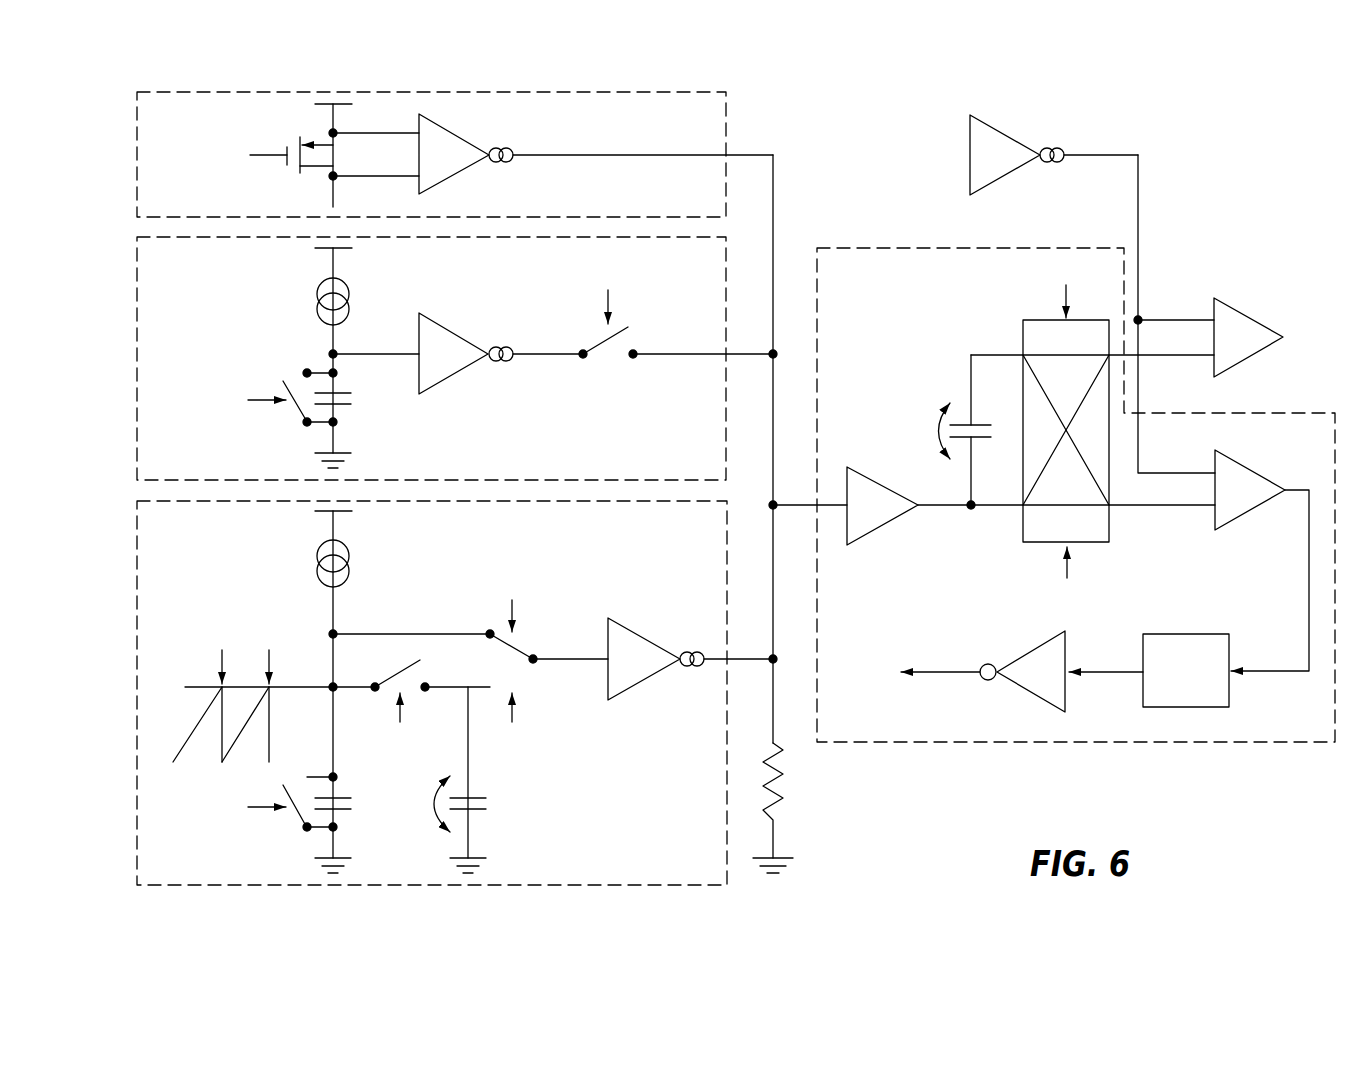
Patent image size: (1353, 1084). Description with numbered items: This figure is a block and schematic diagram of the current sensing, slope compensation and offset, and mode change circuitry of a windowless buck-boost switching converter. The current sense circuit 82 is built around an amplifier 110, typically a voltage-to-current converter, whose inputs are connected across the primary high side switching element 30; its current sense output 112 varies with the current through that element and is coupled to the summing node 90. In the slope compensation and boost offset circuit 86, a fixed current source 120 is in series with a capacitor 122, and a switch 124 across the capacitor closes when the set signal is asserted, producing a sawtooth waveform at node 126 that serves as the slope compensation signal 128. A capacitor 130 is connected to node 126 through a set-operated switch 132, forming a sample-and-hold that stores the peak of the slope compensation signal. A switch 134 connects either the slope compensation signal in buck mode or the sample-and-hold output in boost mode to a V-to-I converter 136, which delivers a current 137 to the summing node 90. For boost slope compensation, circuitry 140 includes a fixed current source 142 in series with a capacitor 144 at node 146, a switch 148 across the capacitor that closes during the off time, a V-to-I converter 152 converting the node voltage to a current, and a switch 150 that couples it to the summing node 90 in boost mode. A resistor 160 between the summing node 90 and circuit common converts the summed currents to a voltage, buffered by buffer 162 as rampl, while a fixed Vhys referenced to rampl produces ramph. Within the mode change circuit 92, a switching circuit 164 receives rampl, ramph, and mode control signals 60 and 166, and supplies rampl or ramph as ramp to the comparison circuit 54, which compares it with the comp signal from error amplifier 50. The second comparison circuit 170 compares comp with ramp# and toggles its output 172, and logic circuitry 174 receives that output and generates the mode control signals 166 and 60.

The primary high side switching element 30 is at (283, 134).
The current sense circuit 82 is at (137, 155).
The amplifier 110 is at (455, 132).
The current sense output 112 is at (607, 160).
The boost slope compensation circuitry 140 is at (137, 348).
The fixed current source 142 is at (348, 287).
The capacitor 144 is at (360, 414).
The node 146 is at (333, 354).
The switch 148 is at (292, 428).
The switch 150 is at (614, 360).
The V-to-I converter 152 is at (455, 331).
The slope compensation and boost offset circuit 86 is at (137, 655).
The fixed current source 120 is at (348, 550).
The capacitor 122 is at (361, 818).
The switch 124 is at (292, 832).
The node 126 is at (333, 687).
The slope compensation signal 128 is at (199, 725).
The capacitor 130 is at (490, 790).
The switch 132 is at (438, 669).
The switch 134 is at (536, 638).
The V-to-I converter 136 is at (650, 640).
The current 137 is at (740, 658).
The summing node 90 is at (773, 505).
The resistor 160 is at (797, 752).
The mode change circuit 92 is at (930, 248).
The error amplifier 50 is at (1003, 132).
The comparison circuit 54 is at (1250, 322).
The mode control signal 60 is at (1072, 567).
The buffer 162 is at (880, 490).
The switching circuit 164 is at (1045, 545).
The mode control signal 166 is at (1062, 298).
The second comparison circuit 170 is at (1250, 470).
The output 172 is at (1309, 580).
The logic circuitry 174 is at (1185, 634).